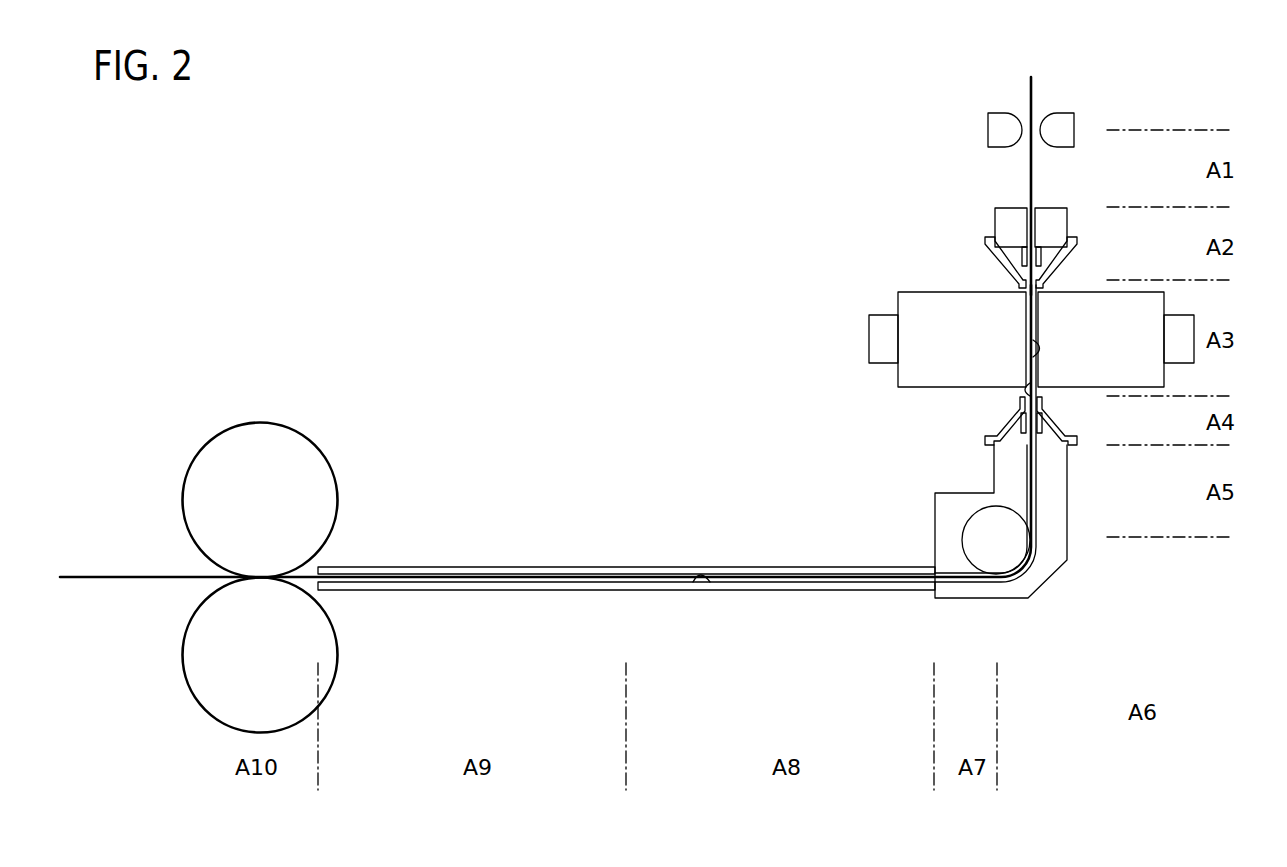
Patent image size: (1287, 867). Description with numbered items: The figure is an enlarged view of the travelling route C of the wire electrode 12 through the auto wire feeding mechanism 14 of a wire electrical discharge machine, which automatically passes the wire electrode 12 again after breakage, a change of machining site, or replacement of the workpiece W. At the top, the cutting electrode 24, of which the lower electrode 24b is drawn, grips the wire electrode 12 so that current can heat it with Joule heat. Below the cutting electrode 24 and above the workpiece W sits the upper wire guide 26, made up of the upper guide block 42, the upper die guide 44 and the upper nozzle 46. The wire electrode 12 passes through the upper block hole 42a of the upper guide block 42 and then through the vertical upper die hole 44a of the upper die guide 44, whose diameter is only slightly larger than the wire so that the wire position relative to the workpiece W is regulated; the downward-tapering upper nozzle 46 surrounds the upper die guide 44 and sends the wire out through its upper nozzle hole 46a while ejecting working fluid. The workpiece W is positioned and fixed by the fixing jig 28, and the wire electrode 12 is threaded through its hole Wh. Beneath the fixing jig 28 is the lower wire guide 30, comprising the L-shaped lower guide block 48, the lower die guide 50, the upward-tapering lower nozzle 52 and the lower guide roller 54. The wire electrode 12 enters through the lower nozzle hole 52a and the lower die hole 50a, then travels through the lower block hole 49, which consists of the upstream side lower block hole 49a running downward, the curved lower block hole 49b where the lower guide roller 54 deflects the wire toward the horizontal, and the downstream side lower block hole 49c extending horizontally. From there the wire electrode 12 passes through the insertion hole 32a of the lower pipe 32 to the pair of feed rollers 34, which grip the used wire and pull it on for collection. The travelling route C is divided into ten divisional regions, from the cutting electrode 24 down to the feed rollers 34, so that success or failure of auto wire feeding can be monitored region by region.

The wire electrode 12 is at (1022, 93).
The auto wire feeding mechanism 14 is at (912, 105).
The cutting electrode 24 is at (1079, 107).
The lower electrode 24b is at (1057, 125).
The upper wire guide 26 is at (906, 178).
The fixing jig 28 is at (876, 350).
The lower wire guide 30 is at (824, 383).
The lower pipe 32 is at (523, 567).
The insertion hole 32a is at (705, 580).
The feed rollers 34 is at (247, 445).
The upper guide block 42 is at (1006, 213).
The upper block hole 42a is at (1022, 255).
The upper die guide 44 is at (1012, 224).
The upper die hole 44a is at (1046, 230).
The upper nozzle 46 is at (1000, 262).
The upper nozzle hole 46a is at (1034, 290).
The lower guide block 48 is at (958, 497).
The lower block hole 49 is at (1148, 562).
The upstream side lower block hole 49a is at (1029, 510).
The curved lower block hole 49b is at (1030, 562).
The downstream side lower block hole 49c is at (975, 578).
The lower die guide 50 is at (1000, 436).
The lower die hole 50a is at (1058, 440).
The lower nozzle 52 is at (1020, 415).
The lower nozzle hole 52a is at (1036, 387).
The lower guide roller 54 is at (985, 530).
The workpiece W is at (897, 292).
The hole Wh is at (1036, 345).
The travelling route C is at (1012, 175).